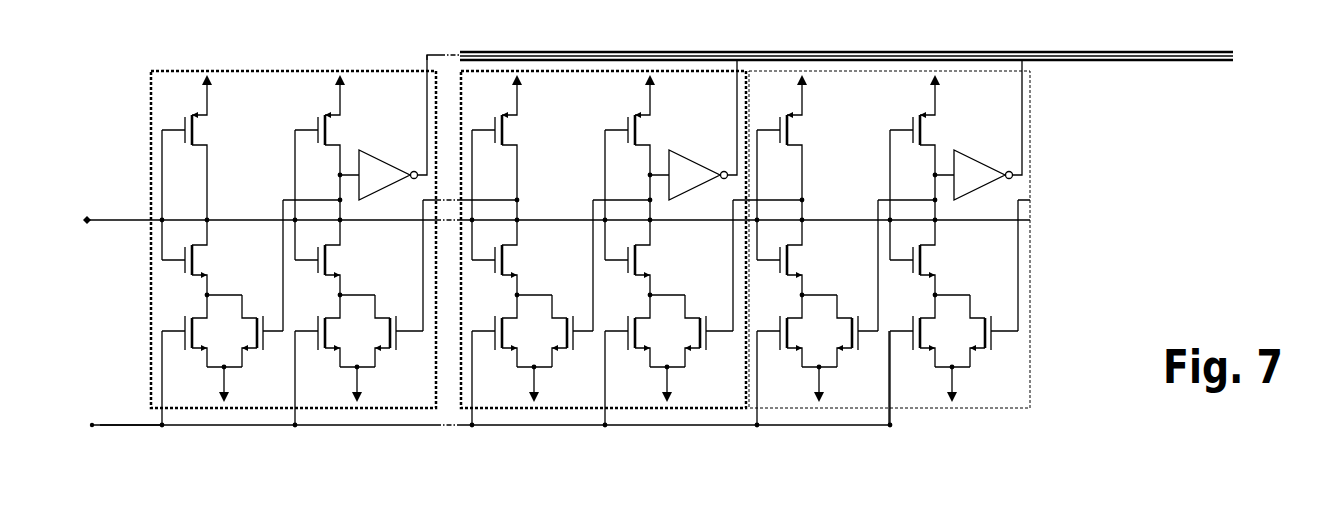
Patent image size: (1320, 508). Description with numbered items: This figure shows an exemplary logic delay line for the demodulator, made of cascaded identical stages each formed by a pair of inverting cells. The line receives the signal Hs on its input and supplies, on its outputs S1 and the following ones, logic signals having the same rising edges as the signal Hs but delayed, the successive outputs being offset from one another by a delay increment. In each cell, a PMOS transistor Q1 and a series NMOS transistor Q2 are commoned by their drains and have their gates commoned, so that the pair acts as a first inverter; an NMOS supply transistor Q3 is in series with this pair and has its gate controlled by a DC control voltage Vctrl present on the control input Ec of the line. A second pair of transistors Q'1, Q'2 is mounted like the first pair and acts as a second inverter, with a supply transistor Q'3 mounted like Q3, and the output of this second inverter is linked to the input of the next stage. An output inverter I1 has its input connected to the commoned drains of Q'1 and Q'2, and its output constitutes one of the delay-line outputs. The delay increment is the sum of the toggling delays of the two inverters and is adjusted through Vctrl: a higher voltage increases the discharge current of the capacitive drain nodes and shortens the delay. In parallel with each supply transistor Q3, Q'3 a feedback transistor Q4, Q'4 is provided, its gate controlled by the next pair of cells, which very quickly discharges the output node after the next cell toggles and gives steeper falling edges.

The PMOS transistor Q1 is at (205, 147).
The NMOS transistor Q2 is at (200, 257).
The NMOS supply transistor Q3 is at (184, 336).
The feedback transistor Q4 is at (262, 336).
The PMOS transistor Q'1 is at (339, 147).
The NMOS transistor Q'2 is at (333, 257).
The supply transistor Q'3 is at (317, 336).
The feedback transistor Q'4 is at (399, 336).
The output inverter I1 is at (383, 127).
The signal Hs is at (541, 218).
The control input Ec is at (472, 379).
The control voltage Vctrl is at (130, 411).
The output S1 is at (883, 39).